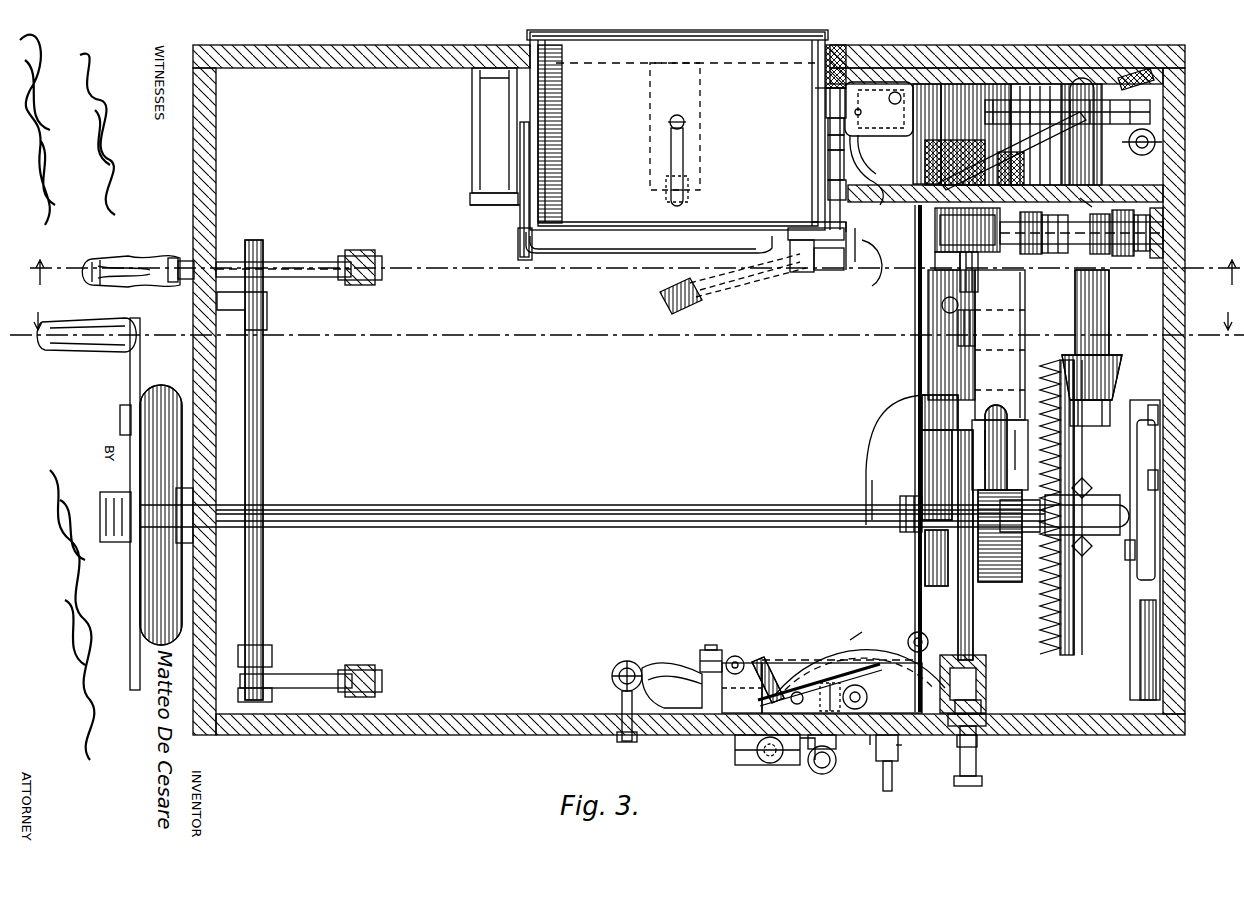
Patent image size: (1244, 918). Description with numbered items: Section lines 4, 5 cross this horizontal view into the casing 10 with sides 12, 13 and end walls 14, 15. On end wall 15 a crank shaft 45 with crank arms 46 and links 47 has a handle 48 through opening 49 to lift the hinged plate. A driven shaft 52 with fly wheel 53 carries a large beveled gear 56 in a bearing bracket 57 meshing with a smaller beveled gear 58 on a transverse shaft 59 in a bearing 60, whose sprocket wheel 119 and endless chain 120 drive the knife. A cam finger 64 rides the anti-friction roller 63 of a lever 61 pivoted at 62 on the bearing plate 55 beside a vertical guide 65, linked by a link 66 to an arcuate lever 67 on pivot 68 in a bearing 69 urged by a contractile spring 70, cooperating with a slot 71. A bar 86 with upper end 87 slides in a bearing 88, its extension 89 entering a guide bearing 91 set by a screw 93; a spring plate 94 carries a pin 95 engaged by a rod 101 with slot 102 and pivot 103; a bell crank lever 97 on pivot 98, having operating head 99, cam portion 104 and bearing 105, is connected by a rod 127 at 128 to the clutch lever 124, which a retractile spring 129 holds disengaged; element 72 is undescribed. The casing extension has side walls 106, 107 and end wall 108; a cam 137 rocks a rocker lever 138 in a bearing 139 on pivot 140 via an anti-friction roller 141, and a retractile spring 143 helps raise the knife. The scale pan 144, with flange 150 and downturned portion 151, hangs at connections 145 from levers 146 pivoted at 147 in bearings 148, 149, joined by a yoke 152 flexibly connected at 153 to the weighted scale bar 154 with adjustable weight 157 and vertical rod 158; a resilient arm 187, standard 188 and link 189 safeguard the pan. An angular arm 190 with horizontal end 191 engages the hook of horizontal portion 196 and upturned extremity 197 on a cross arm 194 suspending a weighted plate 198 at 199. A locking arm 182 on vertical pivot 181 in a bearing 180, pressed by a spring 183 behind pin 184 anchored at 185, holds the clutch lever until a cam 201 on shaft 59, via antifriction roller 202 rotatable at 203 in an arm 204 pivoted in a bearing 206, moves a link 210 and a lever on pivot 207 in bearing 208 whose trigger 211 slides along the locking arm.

The section line 4 is at (633, 263).
The section line 5 is at (625, 332).
The casing 10 is at (420, 732).
The side wall 12 is at (405, 62).
The side wall 13 is at (462, 716).
The end wall 14 is at (1180, 172).
The end wall 15 is at (193, 364).
The crank shaft 45 is at (263, 452).
The crank arms 46 is at (332, 278).
The links 47 is at (348, 252).
The handle 48 is at (150, 254).
The opening 49 is at (188, 280).
The driven shaft 52 is at (512, 505).
The fly wheel 53 is at (142, 598).
The bearing plate 55 is at (868, 440).
The large beveled gear 56 is at (1050, 650).
The bearing bracket 57 is at (1150, 580).
The small beveled gear 58 is at (1110, 362).
The transverse shaft 59 is at (1105, 328).
The bearing 60 is at (1090, 84).
The lever 61 is at (958, 590).
The pivot 62 is at (922, 412).
The anti-friction roller 63 is at (925, 550).
The cam finger 64 is at (900, 510).
The vertical guide 65 is at (975, 664).
The link 66 is at (981, 688).
The arcuate lever 67 is at (832, 683).
The horizontal pivot 68 is at (711, 645).
The bearing 69 is at (690, 665).
The contractile spring 70 is at (626, 660).
The slot 71 is at (986, 740).
The bolt 72 is at (976, 770).
The bar 86 is at (812, 686).
The inwardly extended upper end 87 is at (776, 660).
The bearing 88 is at (742, 688).
The outwardly directed extension 89 is at (800, 752).
The guide bearing 91 is at (740, 752).
The set screw 93 is at (766, 765).
The vertical spring plate 94 is at (868, 750).
The pin 95 is at (898, 760).
The bell crank lever 97 is at (882, 762).
The pivot 98 is at (860, 650).
The operating head 99 is at (822, 774).
The rod 101 is at (790, 660).
The slot 102 is at (858, 680).
The pivot 103 is at (737, 656).
The cam portion 104 is at (850, 640).
The bearing 105 is at (906, 775).
The side wall of extension 106 is at (1050, 70).
The side wall of extension 107 is at (1163, 196).
The end wall of extension 108 is at (828, 126).
The sprocket wheel 119 is at (1150, 112).
The endless chain 120 is at (980, 84).
The vertical clutch lever 124 is at (950, 125).
The rod 127 is at (905, 378).
The connection 128 is at (926, 636).
The retractile spring 129 is at (926, 84).
The cam 137 is at (1000, 582).
The rocker lever 138 is at (1000, 345).
The bearing 139 is at (930, 322).
The pivot 140 is at (958, 330).
The anti-friction roller 141 is at (985, 450).
The retractile spring 143 is at (1140, 155).
The scale pan 144 is at (650, 140).
The pivotal connections 145 is at (520, 134).
The levers 146 is at (518, 230).
The pivots 147 is at (492, 205).
The bearing 148 is at (480, 170).
The bearing 149 is at (828, 188).
The flange portion 150 is at (570, 180).
The downwardly directed outer portion 151 is at (780, 26).
The yoke portion 152 is at (640, 253).
The flexible connections 153 is at (672, 290).
The weighted scale bar 154 is at (738, 288).
The adjustable weight 157 is at (850, 270).
The vertical rod 158 is at (1154, 76).
The bearing 180 is at (872, 82).
The vertical pivot 181 is at (884, 111).
The locking arm 182 is at (918, 285).
The spring 183 is at (864, 170).
The pin 184 is at (828, 104).
The anchor 185 is at (836, 45).
The arm 187 is at (815, 92).
The standard 188 is at (670, 120).
The link 189 is at (685, 160).
The arm 190 is at (800, 274).
The horizontal upper end 191 is at (825, 270).
The cross arm 194 is at (872, 286).
The horizontal portion 196 is at (812, 240).
The upturned extremity 197 is at (812, 222).
The weighted plate 198 is at (958, 278).
The pivotal suspension 199 is at (952, 309).
The eccentric cam 201 is at (1100, 254).
The antifriction roller 202 is at (1163, 246).
The roller axle 203 is at (977, 225).
The upwardly projecting arm 204 is at (1150, 232).
The bearing 206 is at (1134, 214).
The horizontal pivot 207 is at (1028, 254).
The bearing 208 is at (1055, 253).
The link 210 is at (1081, 231).
The trigger 211 is at (949, 266).